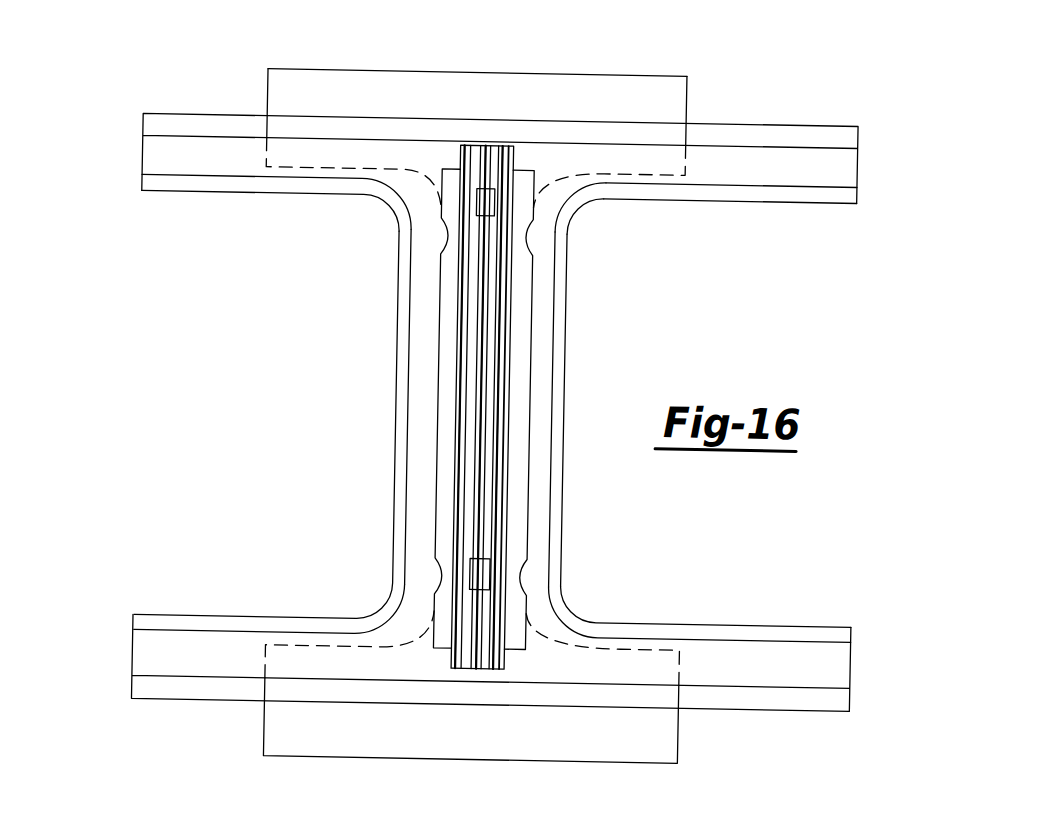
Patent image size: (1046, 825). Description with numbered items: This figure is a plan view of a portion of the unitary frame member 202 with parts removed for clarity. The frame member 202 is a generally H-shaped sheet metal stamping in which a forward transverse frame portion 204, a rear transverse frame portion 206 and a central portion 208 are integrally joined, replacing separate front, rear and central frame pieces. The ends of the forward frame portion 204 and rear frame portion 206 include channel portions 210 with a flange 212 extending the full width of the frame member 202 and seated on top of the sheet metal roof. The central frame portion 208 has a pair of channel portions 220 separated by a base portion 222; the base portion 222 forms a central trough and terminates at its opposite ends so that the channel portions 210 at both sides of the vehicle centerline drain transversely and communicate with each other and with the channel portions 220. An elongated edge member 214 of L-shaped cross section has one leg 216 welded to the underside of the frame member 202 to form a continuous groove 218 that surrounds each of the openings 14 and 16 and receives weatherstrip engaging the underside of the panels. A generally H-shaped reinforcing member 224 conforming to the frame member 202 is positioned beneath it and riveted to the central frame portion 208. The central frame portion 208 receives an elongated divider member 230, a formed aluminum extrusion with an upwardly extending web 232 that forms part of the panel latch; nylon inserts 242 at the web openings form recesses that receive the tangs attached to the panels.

The opening 14 is at (789, 356).
The opening 16 is at (230, 409).
The unitary frame member 202 is at (606, 85).
The forward transverse frame portion 204 is at (653, 670).
The rear transverse frame portion 206 is at (346, 156).
The central frame portion 208 is at (570, 357).
The channel portion 210 is at (839, 164).
The flange 212 is at (221, 95).
The elongated edge member 214 is at (283, 192).
The leg 216 is at (516, 192).
The groove 218 is at (402, 512).
The channel portion 220 is at (420, 424).
The base portion 222 is at (518, 312).
The reinforcing member 224 is at (354, 47).
The divider member 230 is at (516, 510).
The web 232 is at (482, 415).
The nylon insert 242 is at (488, 205).